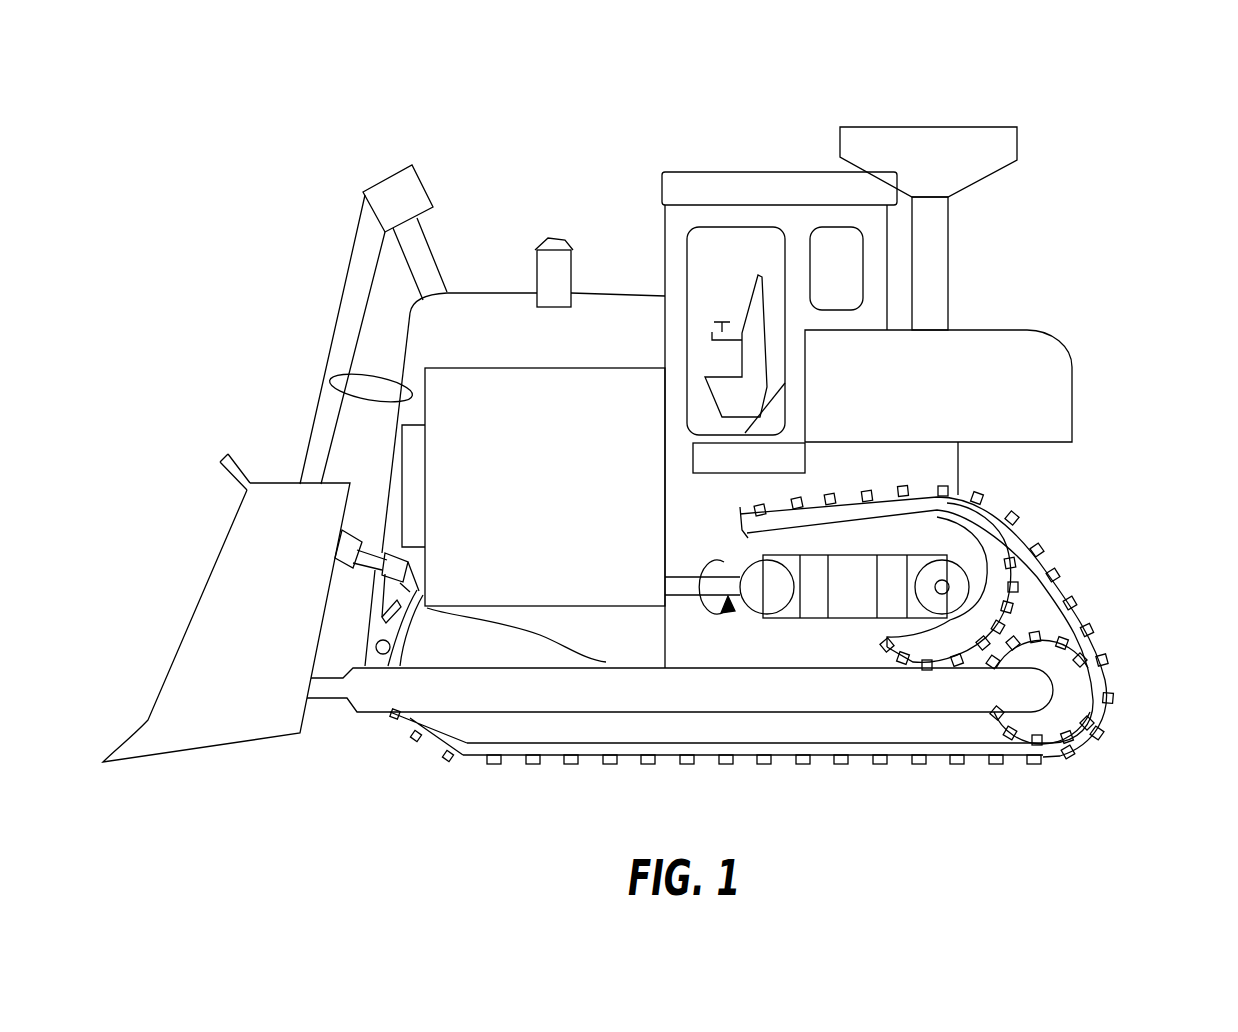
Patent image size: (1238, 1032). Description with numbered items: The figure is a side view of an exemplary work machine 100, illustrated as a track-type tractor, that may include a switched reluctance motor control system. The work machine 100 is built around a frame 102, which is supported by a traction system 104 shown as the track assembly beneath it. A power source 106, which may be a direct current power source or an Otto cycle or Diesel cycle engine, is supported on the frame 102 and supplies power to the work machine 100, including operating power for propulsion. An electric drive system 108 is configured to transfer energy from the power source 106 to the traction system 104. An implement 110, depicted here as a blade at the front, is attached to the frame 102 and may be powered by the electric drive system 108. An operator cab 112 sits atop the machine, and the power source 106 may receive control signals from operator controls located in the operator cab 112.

The work machine 100 is at (1110, 96).
The frame 102 is at (960, 470).
The traction system 104 is at (1107, 682).
The power source 106 is at (853, 620).
The electric drive system 108 is at (529, 500).
The implement 110 is at (197, 604).
The operator cab 112 is at (722, 238).